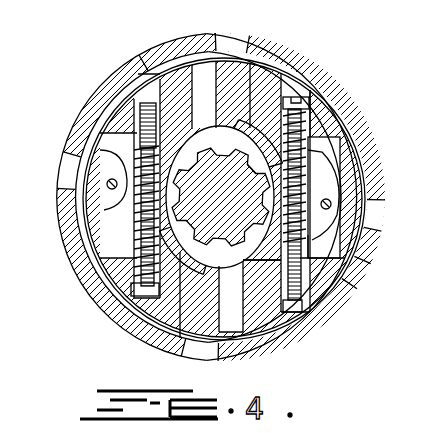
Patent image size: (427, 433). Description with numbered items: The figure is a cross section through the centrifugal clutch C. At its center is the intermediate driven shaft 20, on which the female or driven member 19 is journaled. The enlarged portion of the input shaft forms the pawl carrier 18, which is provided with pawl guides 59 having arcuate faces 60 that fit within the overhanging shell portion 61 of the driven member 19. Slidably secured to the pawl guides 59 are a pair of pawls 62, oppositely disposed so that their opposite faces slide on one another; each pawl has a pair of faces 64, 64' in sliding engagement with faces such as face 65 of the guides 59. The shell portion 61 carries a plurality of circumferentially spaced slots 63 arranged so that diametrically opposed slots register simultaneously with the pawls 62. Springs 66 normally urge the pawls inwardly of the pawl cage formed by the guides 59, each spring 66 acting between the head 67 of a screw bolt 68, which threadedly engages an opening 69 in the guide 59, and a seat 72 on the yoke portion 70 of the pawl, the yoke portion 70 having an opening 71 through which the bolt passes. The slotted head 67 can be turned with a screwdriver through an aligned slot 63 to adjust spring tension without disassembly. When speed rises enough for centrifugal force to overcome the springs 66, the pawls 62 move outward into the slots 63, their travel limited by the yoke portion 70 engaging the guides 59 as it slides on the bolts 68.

The pawl carrier 18 is at (118, 106).
The driven member 19 is at (346, 103).
The intermediate driven shaft 20 is at (238, 214).
The pawl guides 59 is at (170, 76).
The arcuate faces 60 is at (356, 264).
The overhanging shell portion 61 is at (200, 14).
The pawls 62 is at (250, 70).
The slots 63 is at (238, 44).
The pawl face 64 is at (190, 216).
The pawl face 64' is at (306, 83).
The guide face 65 is at (258, 108).
The springs 66 is at (303, 147).
The head 67 is at (320, 92).
The screw bolt 68 is at (310, 248).
The opening 69 is at (304, 300).
The yoke portion 70 is at (248, 165).
The opening 71 is at (303, 172).
The seat 72 is at (321, 211).
The centrifugal clutch C is at (346, 44).